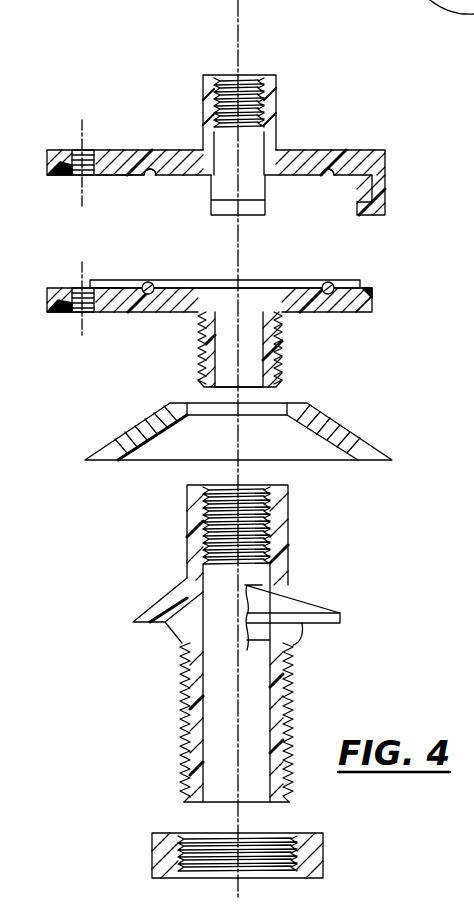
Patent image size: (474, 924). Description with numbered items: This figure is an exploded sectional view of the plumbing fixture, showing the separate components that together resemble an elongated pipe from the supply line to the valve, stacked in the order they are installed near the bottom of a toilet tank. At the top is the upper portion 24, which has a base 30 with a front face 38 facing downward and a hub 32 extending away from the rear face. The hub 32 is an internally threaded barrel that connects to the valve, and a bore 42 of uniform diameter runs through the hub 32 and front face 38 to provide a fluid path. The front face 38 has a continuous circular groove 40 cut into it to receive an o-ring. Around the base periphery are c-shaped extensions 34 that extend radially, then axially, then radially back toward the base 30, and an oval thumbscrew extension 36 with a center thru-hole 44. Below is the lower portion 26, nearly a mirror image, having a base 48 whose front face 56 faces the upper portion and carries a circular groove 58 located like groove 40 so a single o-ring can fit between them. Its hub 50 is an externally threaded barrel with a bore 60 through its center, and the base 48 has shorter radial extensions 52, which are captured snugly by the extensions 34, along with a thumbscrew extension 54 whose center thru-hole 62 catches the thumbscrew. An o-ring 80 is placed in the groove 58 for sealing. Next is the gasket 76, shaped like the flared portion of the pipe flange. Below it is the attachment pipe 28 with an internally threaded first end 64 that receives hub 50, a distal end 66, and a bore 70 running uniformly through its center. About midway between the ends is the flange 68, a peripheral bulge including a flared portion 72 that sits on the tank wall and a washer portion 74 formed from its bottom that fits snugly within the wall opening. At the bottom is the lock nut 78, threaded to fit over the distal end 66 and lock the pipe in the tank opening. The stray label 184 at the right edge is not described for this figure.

The upper portion 24 is at (276, 95).
The lower portion 26 is at (197, 362).
The attachment pipe 28 is at (288, 540).
The base 30 is at (300, 158).
The hub 32 is at (212, 104).
The extensions 34 is at (220, 195).
The thumbscrew extension 36 is at (56, 160).
The front face 38 is at (100, 178).
The circular groove 40 is at (152, 177).
The bore 42 is at (228, 80).
The center thru-hole 44 is at (80, 150).
The base 48 is at (320, 312).
The hub 50 is at (197, 350).
The extensions 52 is at (373, 290).
The thumbscrew extension 54 is at (58, 300).
The front face 56 is at (102, 288).
The circular groove 58 is at (148, 283).
The bore 60 is at (255, 382).
The center thru-hole 62 is at (80, 310).
The first end 64 is at (190, 508).
The distal end 66 is at (183, 720).
The flange 68 is at (322, 597).
The bore 70 is at (258, 508).
The flared portion 72 is at (320, 613).
The washer portion 74 is at (295, 640).
The gasket 76 is at (340, 440).
The lock nut 78 is at (318, 857).
The o-ring 80 is at (295, 281).
The reference numeral from adjacent figure 184 is at (456, 624).